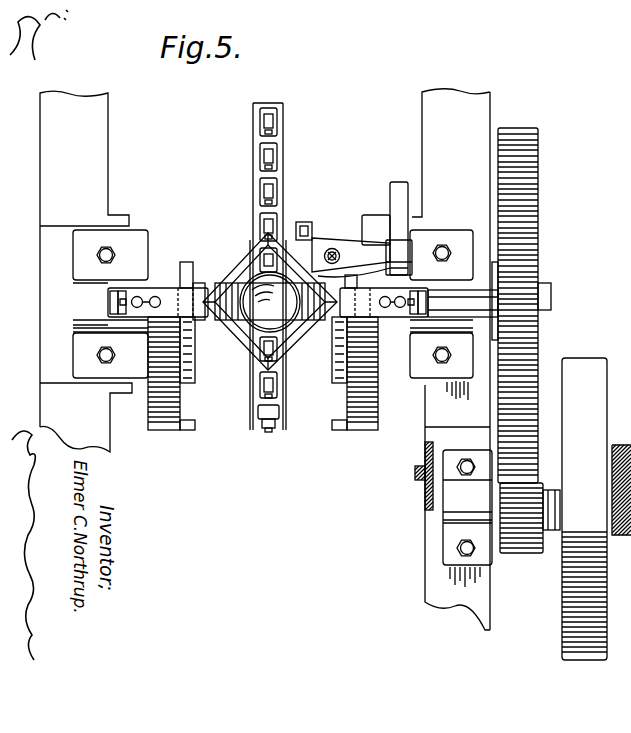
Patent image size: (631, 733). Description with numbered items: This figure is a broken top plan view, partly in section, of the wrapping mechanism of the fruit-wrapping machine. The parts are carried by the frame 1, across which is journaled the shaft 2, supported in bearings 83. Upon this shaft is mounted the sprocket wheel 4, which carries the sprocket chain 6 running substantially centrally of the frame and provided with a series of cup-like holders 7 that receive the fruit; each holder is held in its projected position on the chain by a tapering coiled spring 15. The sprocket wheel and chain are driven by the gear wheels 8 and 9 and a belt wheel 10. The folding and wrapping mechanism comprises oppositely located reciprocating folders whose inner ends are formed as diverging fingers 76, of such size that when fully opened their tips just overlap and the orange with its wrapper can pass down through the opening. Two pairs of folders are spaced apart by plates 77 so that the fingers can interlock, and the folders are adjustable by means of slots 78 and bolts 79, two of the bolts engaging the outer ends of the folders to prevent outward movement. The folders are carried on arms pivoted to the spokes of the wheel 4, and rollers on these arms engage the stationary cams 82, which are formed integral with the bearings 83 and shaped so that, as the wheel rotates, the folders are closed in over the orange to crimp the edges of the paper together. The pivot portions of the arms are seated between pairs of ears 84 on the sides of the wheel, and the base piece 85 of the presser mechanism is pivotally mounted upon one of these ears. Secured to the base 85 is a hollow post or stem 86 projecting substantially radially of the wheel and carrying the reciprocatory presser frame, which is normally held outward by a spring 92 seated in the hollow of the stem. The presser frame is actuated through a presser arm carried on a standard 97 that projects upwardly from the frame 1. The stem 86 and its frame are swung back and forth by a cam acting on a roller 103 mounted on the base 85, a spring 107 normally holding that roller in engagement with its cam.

The frame 1 is at (108, 163).
The shaft 2 is at (630, 432).
The sprocket wheel 4 is at (268, 428).
The sprocket chain 6 is at (283, 118).
The cup-like holder 7 is at (270, 302).
The gear wheel 8 is at (538, 232).
The gear wheel 9 is at (515, 553).
The belt wheel 10 is at (580, 368).
The coiled spring 15 is at (197, 290).
The diverging fingers 76 is at (240, 262).
The plates 77 is at (285, 307).
The slots 78 is at (184, 262).
The bolts 79 is at (155, 308).
The cam 82 is at (184, 383).
The bearings 83 is at (130, 232).
The ears 84 is at (250, 265).
The base piece 85 is at (338, 252).
The hollow post or stem 86 is at (334, 250).
The spring 92 is at (332, 248).
The standard 97 is at (420, 477).
The roller 103 is at (238, 325).
The spring 107 is at (297, 256).